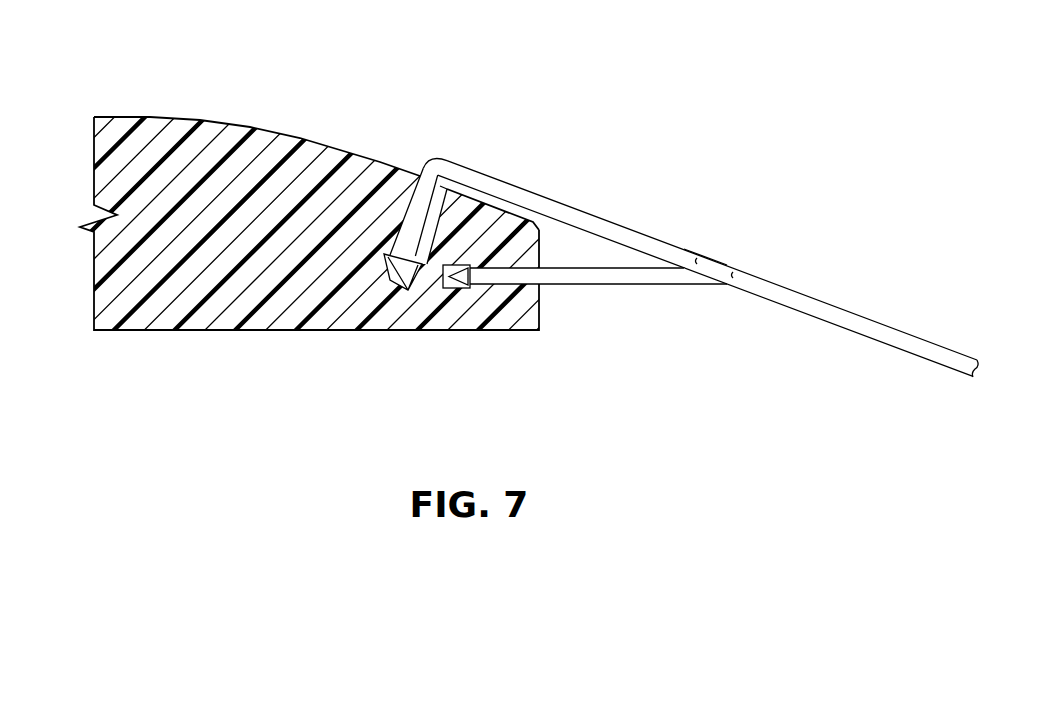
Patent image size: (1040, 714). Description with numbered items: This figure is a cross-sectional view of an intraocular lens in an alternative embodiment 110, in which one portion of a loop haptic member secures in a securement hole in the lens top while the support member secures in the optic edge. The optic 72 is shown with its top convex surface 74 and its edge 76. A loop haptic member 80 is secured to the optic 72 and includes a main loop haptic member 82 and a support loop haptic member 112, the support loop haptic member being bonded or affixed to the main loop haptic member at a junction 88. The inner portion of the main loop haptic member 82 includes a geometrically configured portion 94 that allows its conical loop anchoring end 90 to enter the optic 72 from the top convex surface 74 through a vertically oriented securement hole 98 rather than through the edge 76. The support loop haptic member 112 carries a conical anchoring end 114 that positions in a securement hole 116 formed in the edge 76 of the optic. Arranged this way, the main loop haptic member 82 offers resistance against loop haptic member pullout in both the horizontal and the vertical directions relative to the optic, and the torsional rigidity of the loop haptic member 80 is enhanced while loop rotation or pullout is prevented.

The optic 72 is at (399, 205).
The top convex surface 74 is at (162, 118).
The edge 76 is at (546, 316).
The loop haptic member 80 is at (681, 255).
The main loop haptic member 82 is at (523, 189).
The junction 88 is at (718, 270).
The conical loop anchoring end 90 is at (392, 283).
The geometrically configured portion 94 is at (432, 162).
The vertically oriented securement hole 98 is at (405, 290).
The alternative embodiment 110 is at (489, 237).
The support loop haptic member 112 is at (585, 337).
The conical anchoring end 114 is at (459, 289).
The securement hole 116 is at (452, 281).